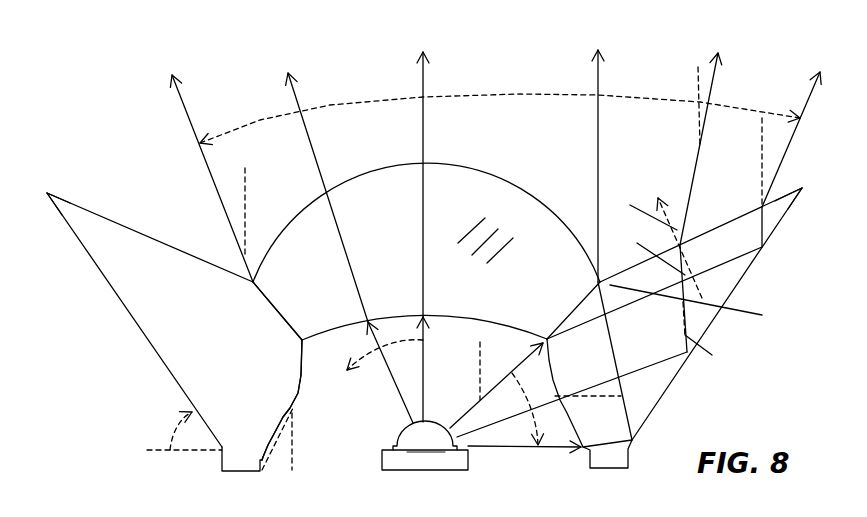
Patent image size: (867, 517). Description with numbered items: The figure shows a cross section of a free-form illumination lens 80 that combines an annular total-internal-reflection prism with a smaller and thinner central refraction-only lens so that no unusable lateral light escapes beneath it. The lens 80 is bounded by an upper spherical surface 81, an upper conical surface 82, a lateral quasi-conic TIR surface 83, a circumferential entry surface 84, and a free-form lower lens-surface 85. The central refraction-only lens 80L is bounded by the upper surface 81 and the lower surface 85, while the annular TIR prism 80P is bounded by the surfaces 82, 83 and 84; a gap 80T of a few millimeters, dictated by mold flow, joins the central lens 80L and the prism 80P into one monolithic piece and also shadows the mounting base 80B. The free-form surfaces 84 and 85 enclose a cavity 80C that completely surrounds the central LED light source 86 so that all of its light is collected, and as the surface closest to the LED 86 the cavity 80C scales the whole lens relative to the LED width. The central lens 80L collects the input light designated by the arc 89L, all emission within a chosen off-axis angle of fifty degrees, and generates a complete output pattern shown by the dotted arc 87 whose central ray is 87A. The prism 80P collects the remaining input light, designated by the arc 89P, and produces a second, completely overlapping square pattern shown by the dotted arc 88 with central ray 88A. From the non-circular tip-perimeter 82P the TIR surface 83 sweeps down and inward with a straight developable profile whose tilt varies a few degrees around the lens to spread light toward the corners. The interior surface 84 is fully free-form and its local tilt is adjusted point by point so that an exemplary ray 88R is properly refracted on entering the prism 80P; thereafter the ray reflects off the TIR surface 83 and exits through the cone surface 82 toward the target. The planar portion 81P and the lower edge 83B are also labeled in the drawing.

The free-form illumination lens 80 is at (117, 133).
The annular TIR prism 80P is at (229, 371).
The central refraction-only lens 80L is at (426, 302).
The gap 80T is at (591, 286).
The cavity 80C is at (360, 445).
The mounting base 80B is at (674, 349).
The upper spherical surface 81 is at (497, 173).
The planar portion 81P is at (712, 311).
The upper conical surface 82 is at (173, 247).
The tip-perimeter 82P is at (47, 195).
The lateral quasi-conic TIR surface 83 is at (142, 342).
The right reflector outer edge 83B is at (637, 437).
The circumferential entry surface 84 is at (303, 392).
The free-form lower lens-surface 85 is at (460, 318).
The LED light source 86 is at (472, 470).
The output pattern arc 87 is at (242, 122).
The central ray 87A is at (420, 88).
The output pattern arc 88 is at (735, 100).
The central ray 88A is at (608, 75).
The exemplary ray 88R is at (692, 178).
The input light arc 89L is at (397, 333).
The input light arc 89P is at (550, 369).